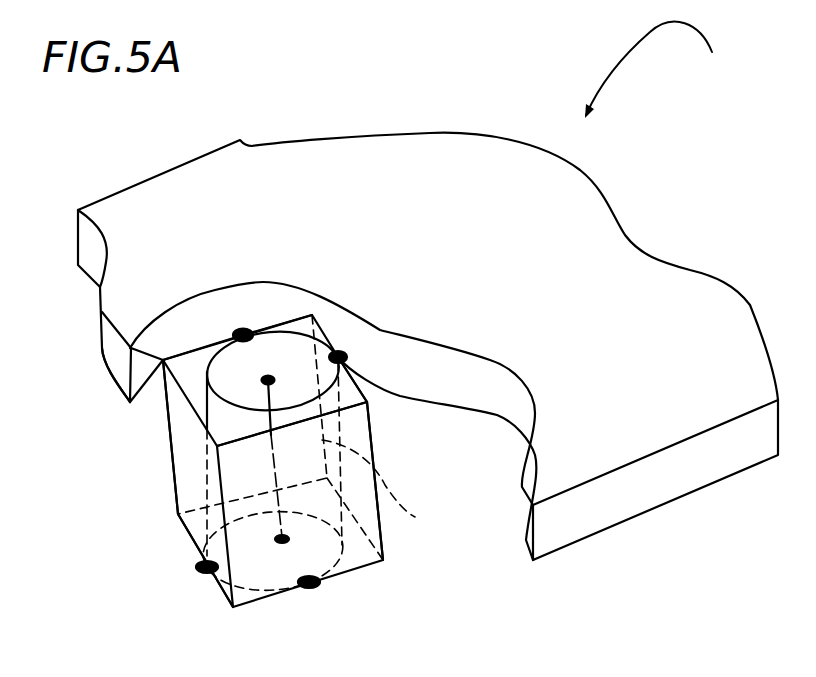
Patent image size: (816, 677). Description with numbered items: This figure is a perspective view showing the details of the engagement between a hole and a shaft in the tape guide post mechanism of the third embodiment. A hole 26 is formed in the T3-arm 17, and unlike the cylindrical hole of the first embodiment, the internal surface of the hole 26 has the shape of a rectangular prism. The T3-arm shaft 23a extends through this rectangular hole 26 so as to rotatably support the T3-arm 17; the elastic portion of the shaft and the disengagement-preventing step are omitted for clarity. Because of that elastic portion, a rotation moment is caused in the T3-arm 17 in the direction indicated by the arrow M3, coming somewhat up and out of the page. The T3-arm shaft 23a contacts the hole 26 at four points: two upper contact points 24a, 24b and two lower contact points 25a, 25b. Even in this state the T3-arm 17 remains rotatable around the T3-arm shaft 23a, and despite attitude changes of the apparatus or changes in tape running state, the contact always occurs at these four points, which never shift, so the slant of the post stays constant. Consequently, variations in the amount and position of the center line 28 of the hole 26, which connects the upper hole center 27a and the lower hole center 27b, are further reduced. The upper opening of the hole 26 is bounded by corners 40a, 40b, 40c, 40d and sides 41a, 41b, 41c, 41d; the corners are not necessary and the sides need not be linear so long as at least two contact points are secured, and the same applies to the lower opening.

The T3-arm 17 is at (712, 293).
The arrow M3 is at (660, 70).
The hole 26 is at (379, 523).
The center line 28 is at (190, 533).
The upper hole center 27a is at (268, 380).
The lower hole center 27b is at (282, 547).
The upper contact point 24a is at (338, 357).
The upper contact point 24b is at (243, 335).
The lower contact point 25a is at (311, 588).
The lower contact point 25b is at (205, 572).
The T3-arm shaft 23a is at (389, 489).
The side of the upper opening 41c is at (193, 347).
The corner of the upper opening 40d is at (313, 314).
The corner of the upper opening 40c is at (131, 348).
The side of the upper opening 41b is at (185, 392).
The corner of the upper opening 40b is at (215, 447).
The side of the upper opening 41d is at (343, 365).
The corner of the upper opening 40a is at (367, 402).
The side of the upper opening 41a is at (369, 428).